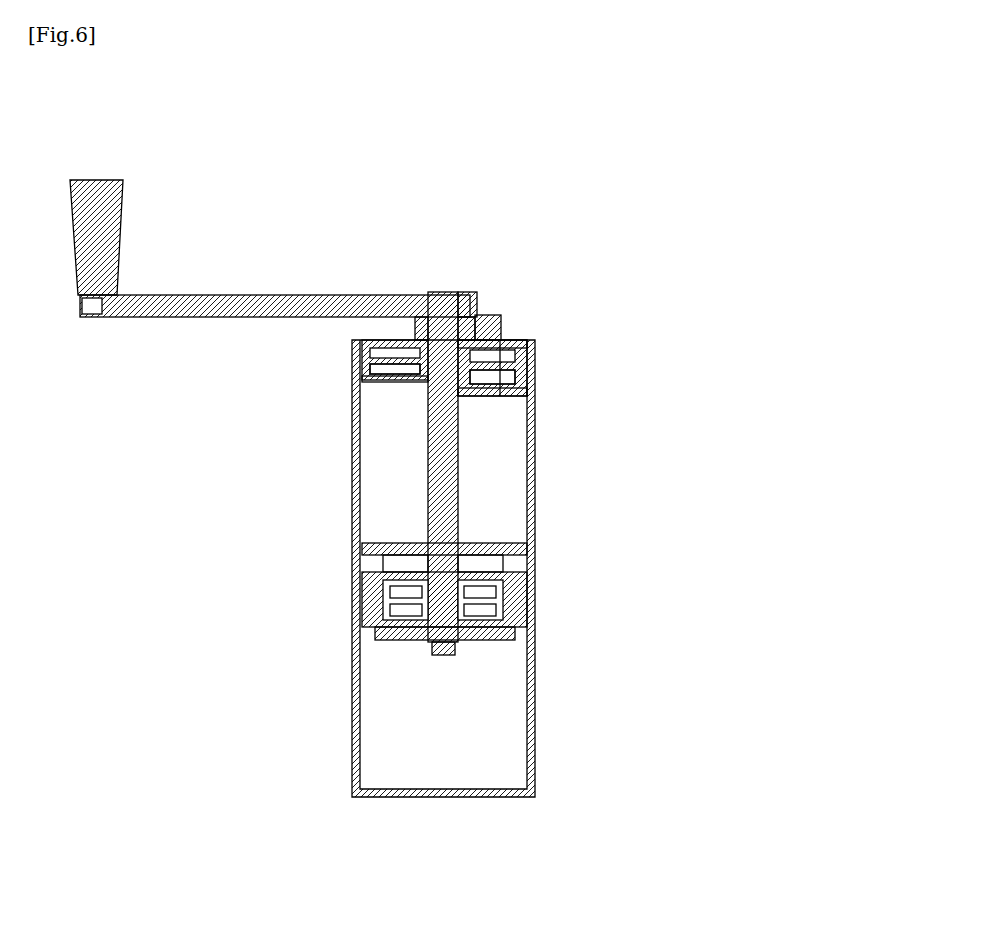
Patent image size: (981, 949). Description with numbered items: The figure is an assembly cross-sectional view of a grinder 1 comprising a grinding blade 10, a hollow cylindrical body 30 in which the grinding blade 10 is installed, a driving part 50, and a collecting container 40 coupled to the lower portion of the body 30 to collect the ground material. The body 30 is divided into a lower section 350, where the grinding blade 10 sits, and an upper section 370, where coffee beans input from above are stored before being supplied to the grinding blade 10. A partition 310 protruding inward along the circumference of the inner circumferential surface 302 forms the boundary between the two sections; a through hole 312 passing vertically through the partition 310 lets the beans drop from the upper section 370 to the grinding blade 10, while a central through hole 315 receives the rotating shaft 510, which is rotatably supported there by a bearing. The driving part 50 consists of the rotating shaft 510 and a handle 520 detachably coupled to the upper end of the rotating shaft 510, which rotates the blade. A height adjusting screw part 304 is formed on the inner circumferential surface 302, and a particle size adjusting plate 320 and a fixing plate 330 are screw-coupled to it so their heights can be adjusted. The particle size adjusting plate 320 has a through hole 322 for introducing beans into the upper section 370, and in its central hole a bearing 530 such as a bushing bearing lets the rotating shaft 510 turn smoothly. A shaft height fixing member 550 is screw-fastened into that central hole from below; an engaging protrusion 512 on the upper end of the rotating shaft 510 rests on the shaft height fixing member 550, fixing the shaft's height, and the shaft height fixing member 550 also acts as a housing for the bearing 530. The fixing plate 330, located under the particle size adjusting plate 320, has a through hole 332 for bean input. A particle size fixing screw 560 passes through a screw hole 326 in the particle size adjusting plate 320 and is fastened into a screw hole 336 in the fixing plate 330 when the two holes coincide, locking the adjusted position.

The grinder 1 is at (305, 447).
The grinding blade 10 is at (357, 618).
The body 30 is at (541, 517).
The collecting container 40 is at (539, 745).
The driving part 50 is at (462, 288).
The inner circumferential surface 302 is at (390, 470).
The height adjusting screw part 304 is at (356, 408).
The partition 310 is at (372, 548).
The through hole 312 is at (520, 552).
The through hole 315 is at (386, 568).
The particle size adjusting plate 320 is at (535, 368).
The through hole 322 is at (356, 362).
The screw hole 326 is at (535, 358).
The fixing plate 330 is at (535, 380).
The through hole 332 is at (356, 378).
The screw hole 336 is at (535, 392).
The lower section 350 is at (540, 578).
The upper section 370 is at (537, 466).
The rotating shaft 510 is at (437, 300).
The engaging protrusion 512 is at (472, 322).
The handle 520 is at (282, 300).
The bearing 530 is at (420, 326).
The shaft height fixing member 550 is at (480, 326).
The particle size fixing screw 560 is at (484, 330).